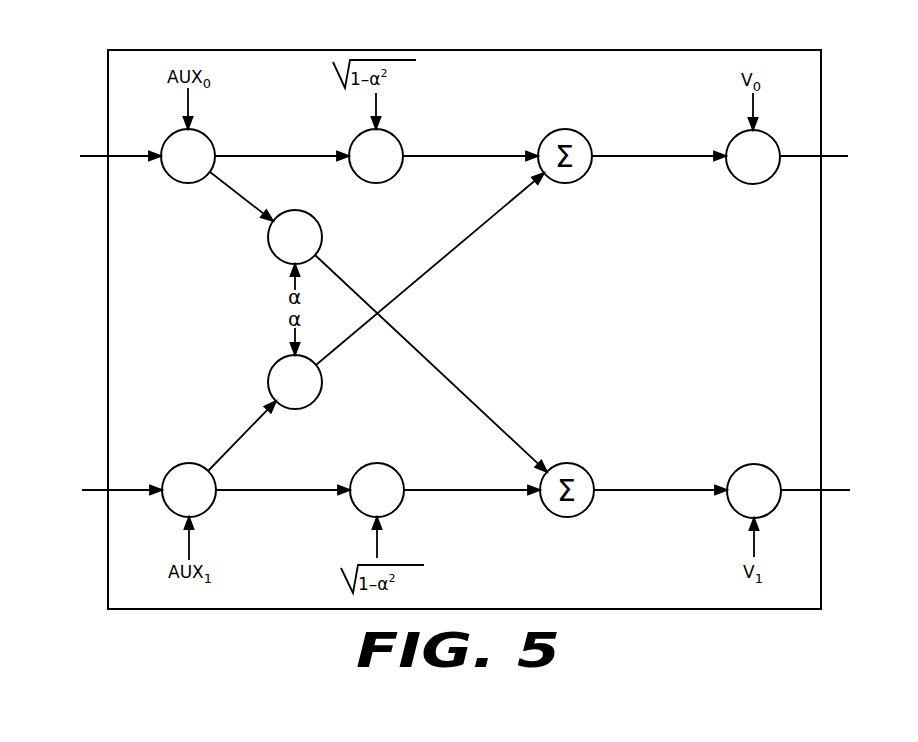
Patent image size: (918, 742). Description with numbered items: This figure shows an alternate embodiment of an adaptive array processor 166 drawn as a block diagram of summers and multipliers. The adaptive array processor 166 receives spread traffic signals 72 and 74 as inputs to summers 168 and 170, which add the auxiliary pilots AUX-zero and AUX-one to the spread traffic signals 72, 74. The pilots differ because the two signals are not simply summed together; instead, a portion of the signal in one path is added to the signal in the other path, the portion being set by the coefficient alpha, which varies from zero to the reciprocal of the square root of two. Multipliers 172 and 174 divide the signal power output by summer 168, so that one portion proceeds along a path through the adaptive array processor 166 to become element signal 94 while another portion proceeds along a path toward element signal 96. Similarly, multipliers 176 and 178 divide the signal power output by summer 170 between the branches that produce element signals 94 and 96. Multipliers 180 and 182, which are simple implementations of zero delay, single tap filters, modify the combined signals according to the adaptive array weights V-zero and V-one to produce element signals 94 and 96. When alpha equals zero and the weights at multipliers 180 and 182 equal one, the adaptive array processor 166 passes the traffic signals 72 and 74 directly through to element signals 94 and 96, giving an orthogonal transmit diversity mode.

The adaptive array processor 166 is at (215, 50).
The spread traffic signal 72 is at (95, 153).
The spread traffic signal 74 is at (98, 488).
The element signal 94 is at (830, 155).
The element signal 96 is at (835, 489).
The summer 168 is at (207, 130).
The summer 170 is at (175, 463).
The multiplier 172 is at (395, 135).
The multiplier 174 is at (320, 227).
The multiplier 176 is at (380, 463).
The multiplier 178 is at (320, 378).
The multiplier 180 is at (733, 178).
The multiplier 182 is at (755, 463).